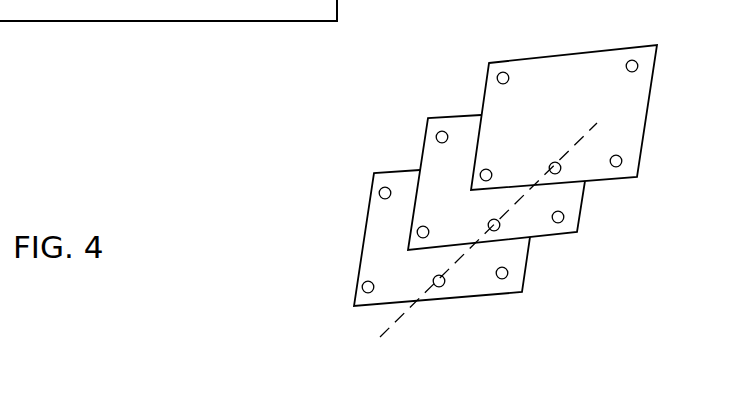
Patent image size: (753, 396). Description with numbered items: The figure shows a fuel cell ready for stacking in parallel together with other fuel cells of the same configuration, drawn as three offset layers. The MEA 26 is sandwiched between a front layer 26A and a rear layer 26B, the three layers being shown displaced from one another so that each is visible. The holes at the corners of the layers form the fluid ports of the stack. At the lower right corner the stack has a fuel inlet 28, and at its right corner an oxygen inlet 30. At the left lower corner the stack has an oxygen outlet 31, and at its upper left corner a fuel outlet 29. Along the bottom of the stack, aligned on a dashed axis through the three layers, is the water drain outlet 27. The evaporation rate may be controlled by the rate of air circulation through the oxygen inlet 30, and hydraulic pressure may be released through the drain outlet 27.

The MEA 26 is at (466, 130).
The front layer 26A is at (578, 72).
The rear layer 26B is at (493, 289).
The water drain outlet 27 is at (552, 173).
The fuel inlet 28 is at (508, 273).
The fuel outlet 29 is at (504, 72).
The oxygen inlet 30 is at (639, 65).
The oxygen outlet 31 is at (417, 232).